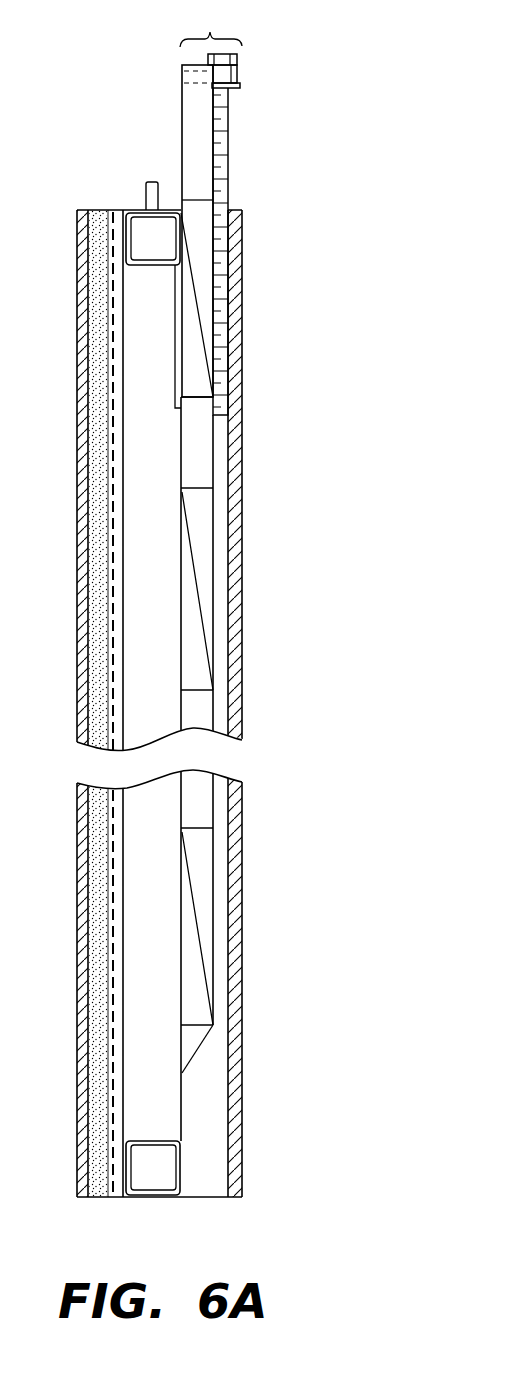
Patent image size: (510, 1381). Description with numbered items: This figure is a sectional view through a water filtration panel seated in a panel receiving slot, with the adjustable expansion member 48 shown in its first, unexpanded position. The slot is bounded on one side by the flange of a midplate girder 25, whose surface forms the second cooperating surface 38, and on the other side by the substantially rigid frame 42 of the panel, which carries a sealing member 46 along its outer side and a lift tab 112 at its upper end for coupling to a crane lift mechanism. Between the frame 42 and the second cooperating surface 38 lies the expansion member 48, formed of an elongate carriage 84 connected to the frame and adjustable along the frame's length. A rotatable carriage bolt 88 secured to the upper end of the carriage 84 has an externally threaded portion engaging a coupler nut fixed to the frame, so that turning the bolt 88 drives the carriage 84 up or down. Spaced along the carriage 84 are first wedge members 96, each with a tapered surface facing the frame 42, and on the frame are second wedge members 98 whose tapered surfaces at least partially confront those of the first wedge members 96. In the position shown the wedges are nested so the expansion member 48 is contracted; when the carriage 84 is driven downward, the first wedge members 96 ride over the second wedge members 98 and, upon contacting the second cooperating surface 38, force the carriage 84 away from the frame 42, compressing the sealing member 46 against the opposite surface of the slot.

The midplate girder 25 is at (235, 513).
The second cooperating surface 38 is at (227, 1163).
The substantially rigid frame 42 is at (175, 1127).
The sealing member 46 is at (97, 210).
The adjustable expansion member 48 is at (211, 207).
The elongate carriage 84 is at (182, 73).
The rotatable carriage bolt 88 is at (237, 58).
The first wedge member 96 is at (198, 828).
The second wedge member 98 is at (195, 1028).
The lift tab 112 is at (150, 182).